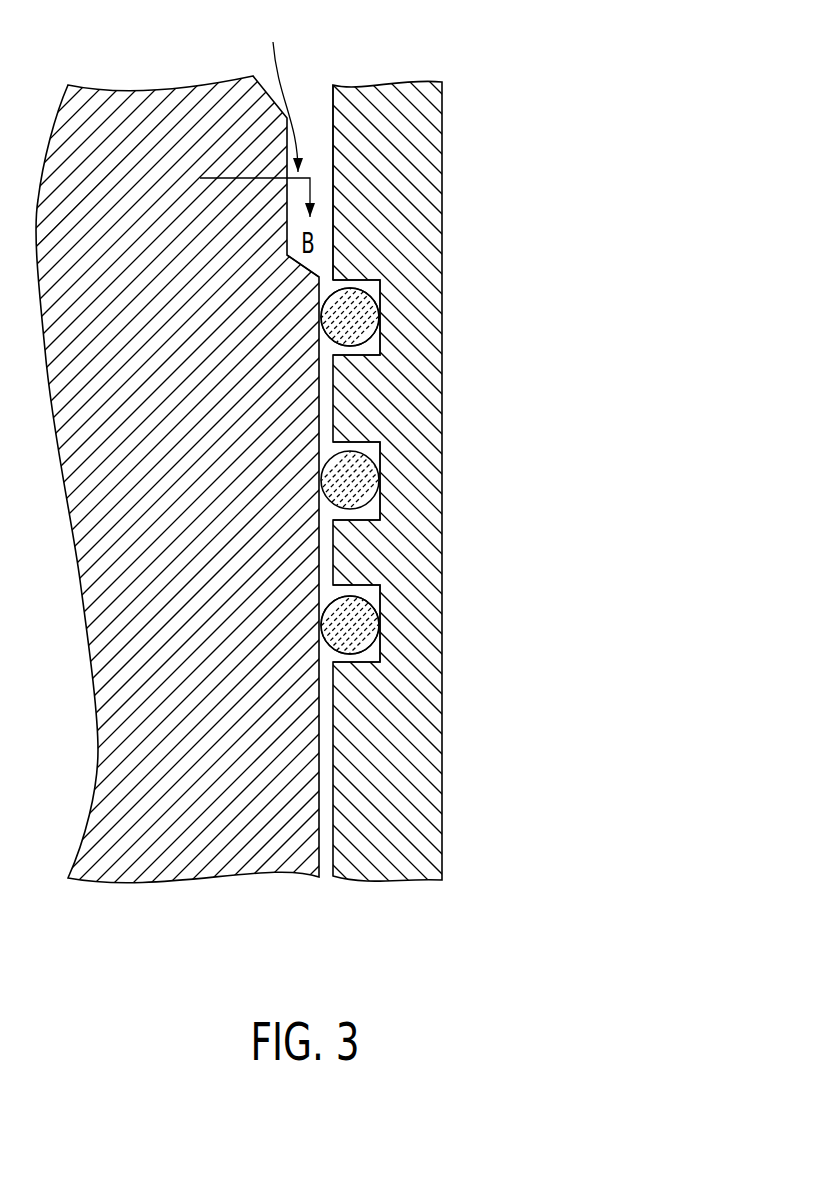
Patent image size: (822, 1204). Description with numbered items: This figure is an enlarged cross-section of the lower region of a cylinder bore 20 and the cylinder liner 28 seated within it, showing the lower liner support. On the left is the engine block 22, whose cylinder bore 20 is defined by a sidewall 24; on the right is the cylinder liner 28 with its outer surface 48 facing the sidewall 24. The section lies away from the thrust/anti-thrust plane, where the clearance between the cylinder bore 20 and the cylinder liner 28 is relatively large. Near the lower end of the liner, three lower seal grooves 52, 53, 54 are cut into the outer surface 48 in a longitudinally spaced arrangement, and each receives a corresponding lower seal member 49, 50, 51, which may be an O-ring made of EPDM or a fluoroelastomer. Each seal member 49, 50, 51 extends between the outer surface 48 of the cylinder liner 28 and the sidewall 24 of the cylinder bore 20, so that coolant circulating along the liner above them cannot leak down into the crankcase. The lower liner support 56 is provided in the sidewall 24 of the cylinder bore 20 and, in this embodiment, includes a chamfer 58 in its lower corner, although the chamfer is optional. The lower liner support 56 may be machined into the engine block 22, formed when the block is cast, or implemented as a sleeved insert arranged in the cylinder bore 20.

The cylinder bore 20 is at (333, 620).
The engine block 22 is at (137, 103).
The sidewall 24 is at (333, 312).
The cylinder liner 28 is at (427, 128).
The outer surface 48 is at (333, 150).
The lower seal member 49 is at (365, 328).
The lower seal member 50 is at (363, 488).
The lower seal member 51 is at (363, 633).
The lower seal groove 52 is at (362, 302).
The lower seal groove 53 is at (362, 463).
The lower seal groove 54 is at (362, 608).
The lower liner support 56 is at (280, 89).
The chamfer 58 is at (298, 258).